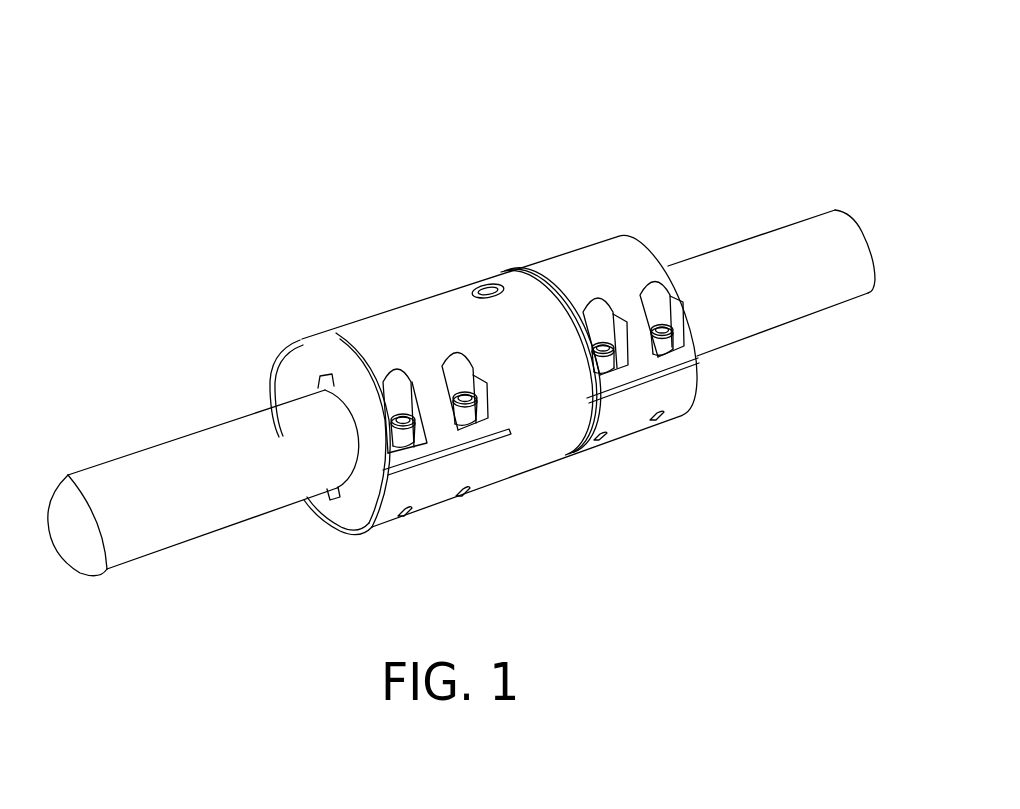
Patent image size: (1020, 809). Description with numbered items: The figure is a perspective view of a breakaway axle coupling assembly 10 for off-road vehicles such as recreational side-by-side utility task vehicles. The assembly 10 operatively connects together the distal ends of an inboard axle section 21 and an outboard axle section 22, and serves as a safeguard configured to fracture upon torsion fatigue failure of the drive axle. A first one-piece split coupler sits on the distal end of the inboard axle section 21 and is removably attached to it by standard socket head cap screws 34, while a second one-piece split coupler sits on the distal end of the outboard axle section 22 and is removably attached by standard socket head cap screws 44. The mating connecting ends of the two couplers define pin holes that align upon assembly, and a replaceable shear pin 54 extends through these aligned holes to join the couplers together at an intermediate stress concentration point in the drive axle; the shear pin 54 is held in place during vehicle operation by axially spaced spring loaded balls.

The breakaway axle coupling assembly 10 is at (574, 10).
The inboard axle section 21 is at (183, 457).
The outboard axle section 22 is at (765, 255).
The socket head cap screws 34 is at (461, 390).
The socket head cap screws 44 is at (596, 340).
The shear pin 54 is at (487, 285).